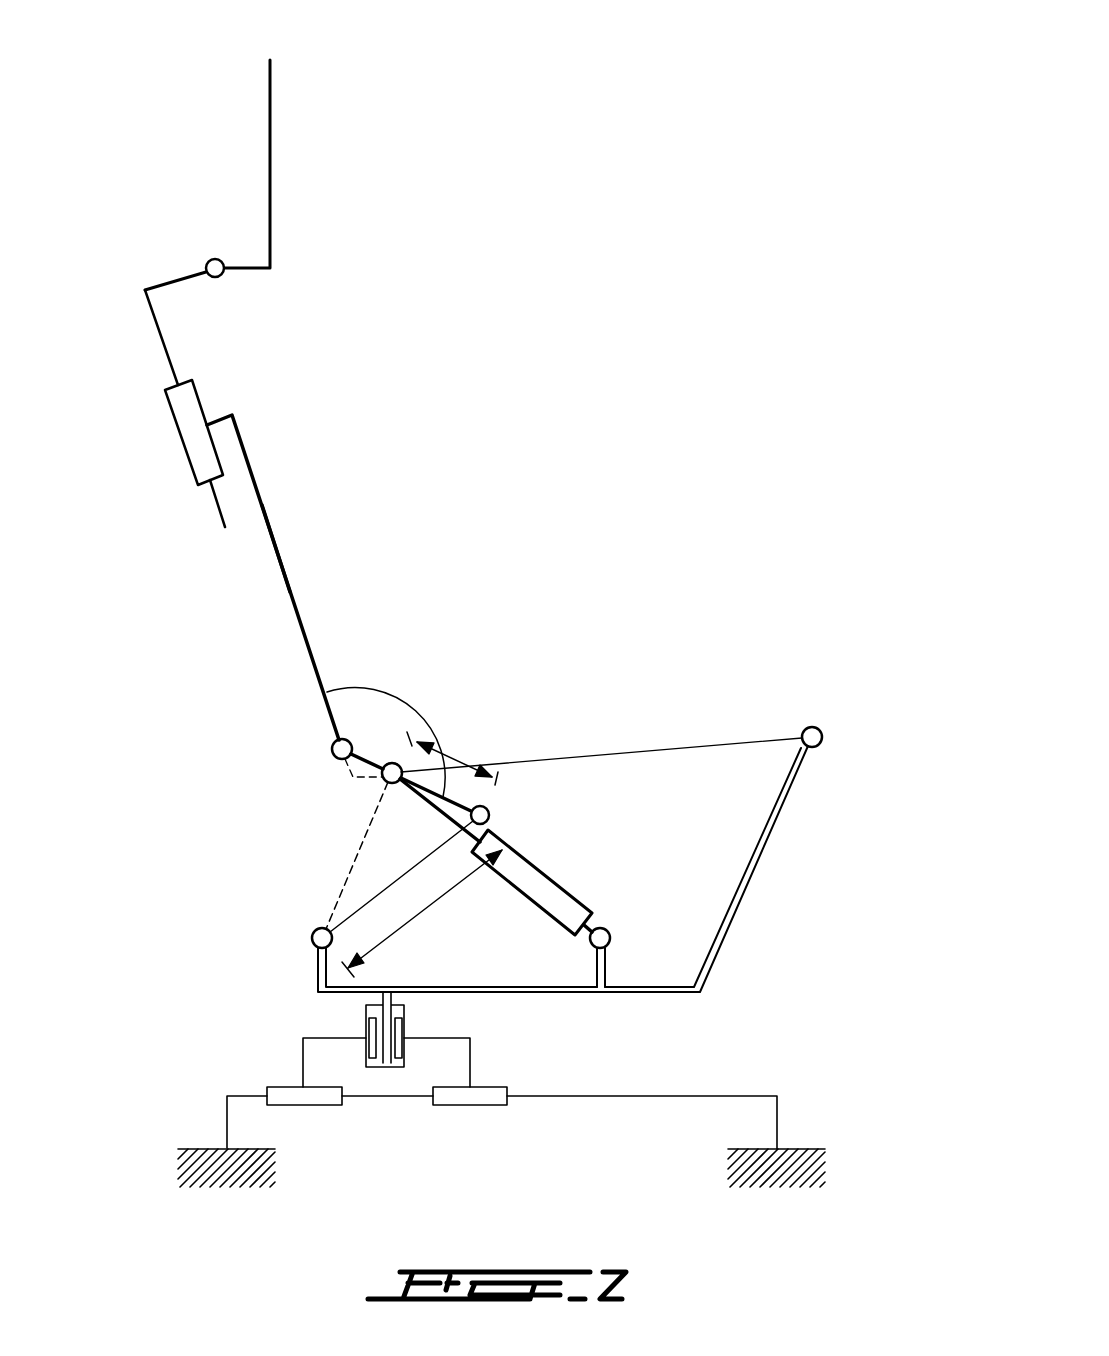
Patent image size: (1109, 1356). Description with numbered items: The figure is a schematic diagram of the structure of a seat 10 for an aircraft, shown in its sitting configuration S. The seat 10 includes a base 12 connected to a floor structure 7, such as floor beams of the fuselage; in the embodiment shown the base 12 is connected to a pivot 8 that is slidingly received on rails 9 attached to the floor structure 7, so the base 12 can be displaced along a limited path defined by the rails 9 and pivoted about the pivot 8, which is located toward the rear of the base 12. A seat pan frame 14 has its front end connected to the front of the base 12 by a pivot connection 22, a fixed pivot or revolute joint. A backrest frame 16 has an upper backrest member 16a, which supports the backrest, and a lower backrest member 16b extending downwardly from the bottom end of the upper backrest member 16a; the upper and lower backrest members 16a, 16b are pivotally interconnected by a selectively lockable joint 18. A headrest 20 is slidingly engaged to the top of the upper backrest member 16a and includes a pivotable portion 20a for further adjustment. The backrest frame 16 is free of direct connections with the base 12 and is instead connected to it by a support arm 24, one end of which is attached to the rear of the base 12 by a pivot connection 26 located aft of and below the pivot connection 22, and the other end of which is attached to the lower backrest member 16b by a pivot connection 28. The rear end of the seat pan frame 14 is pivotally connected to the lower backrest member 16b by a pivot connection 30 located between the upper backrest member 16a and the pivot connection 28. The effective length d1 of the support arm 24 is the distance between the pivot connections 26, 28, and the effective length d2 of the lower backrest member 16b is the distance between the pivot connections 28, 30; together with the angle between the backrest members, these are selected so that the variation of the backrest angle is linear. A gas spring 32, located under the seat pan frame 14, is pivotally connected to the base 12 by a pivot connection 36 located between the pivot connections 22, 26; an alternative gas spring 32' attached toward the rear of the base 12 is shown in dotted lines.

The floor structure 7 is at (782, 1165).
The pivot 8 is at (385, 1068).
The rails 9 is at (592, 1097).
The seat 10 is at (631, 182).
The base 12 is at (770, 875).
The seat pan frame 14 is at (706, 745).
The backrest frame 16 is at (280, 523).
The upper backrest member 16a is at (297, 608).
The lower backrest member 16b is at (455, 800).
The pivot joint 18 is at (332, 750).
The headrest 20 is at (145, 290).
The pivotable portion 20a is at (270, 130).
The pivot connection 22 is at (812, 727).
The support arm 24 is at (358, 900).
The pivot connection 26 is at (312, 939).
The pivot connection 28 is at (490, 814).
The pivot connection 30 is at (382, 778).
The gas spring 32 is at (526, 857).
The gas spring 32' is at (320, 855).
The pivot connection 36 is at (612, 936).
The sitting configuration S is at (287, 358).
The effective length of the support arm d1 is at (428, 904).
The effective length of the lower backrest member d2 is at (453, 760).